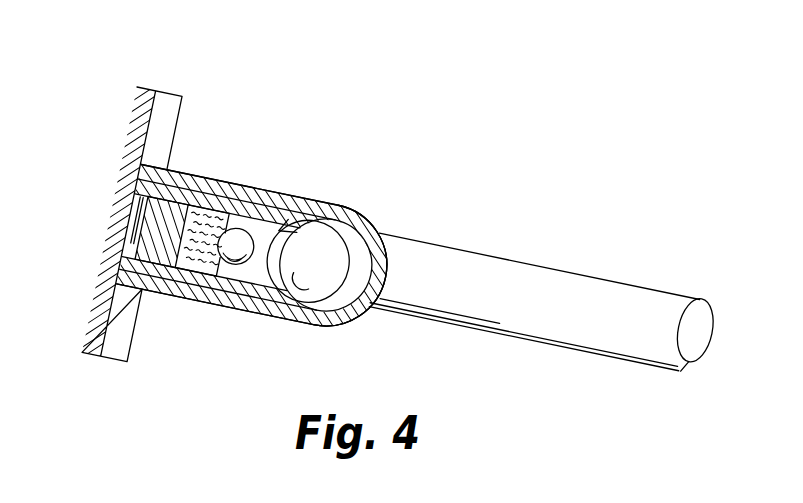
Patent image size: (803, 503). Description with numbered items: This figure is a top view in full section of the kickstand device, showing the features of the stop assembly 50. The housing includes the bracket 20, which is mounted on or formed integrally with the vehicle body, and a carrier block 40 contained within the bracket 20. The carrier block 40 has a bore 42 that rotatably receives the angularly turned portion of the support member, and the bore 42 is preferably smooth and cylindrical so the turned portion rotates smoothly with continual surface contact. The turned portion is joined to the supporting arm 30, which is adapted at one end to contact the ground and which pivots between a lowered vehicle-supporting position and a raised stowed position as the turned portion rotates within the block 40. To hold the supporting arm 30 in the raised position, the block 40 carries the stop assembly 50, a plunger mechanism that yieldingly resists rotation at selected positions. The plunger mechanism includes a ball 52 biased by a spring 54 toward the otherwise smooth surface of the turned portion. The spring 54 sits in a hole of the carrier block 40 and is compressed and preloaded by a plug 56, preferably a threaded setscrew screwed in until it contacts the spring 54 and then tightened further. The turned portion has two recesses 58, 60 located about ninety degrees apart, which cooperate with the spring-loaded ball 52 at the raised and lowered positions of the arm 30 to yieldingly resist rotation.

The bracket 20 is at (282, 190).
The supporting arm 30 is at (576, 292).
The carrier block 40 is at (177, 277).
The bore 42 is at (316, 320).
The stop assembly 50 is at (263, 122).
The ball 52 is at (220, 293).
The spring 54 is at (221, 193).
The plug 56 is at (137, 240).
The recess 58 is at (243, 300).
The recess 60 is at (293, 216).